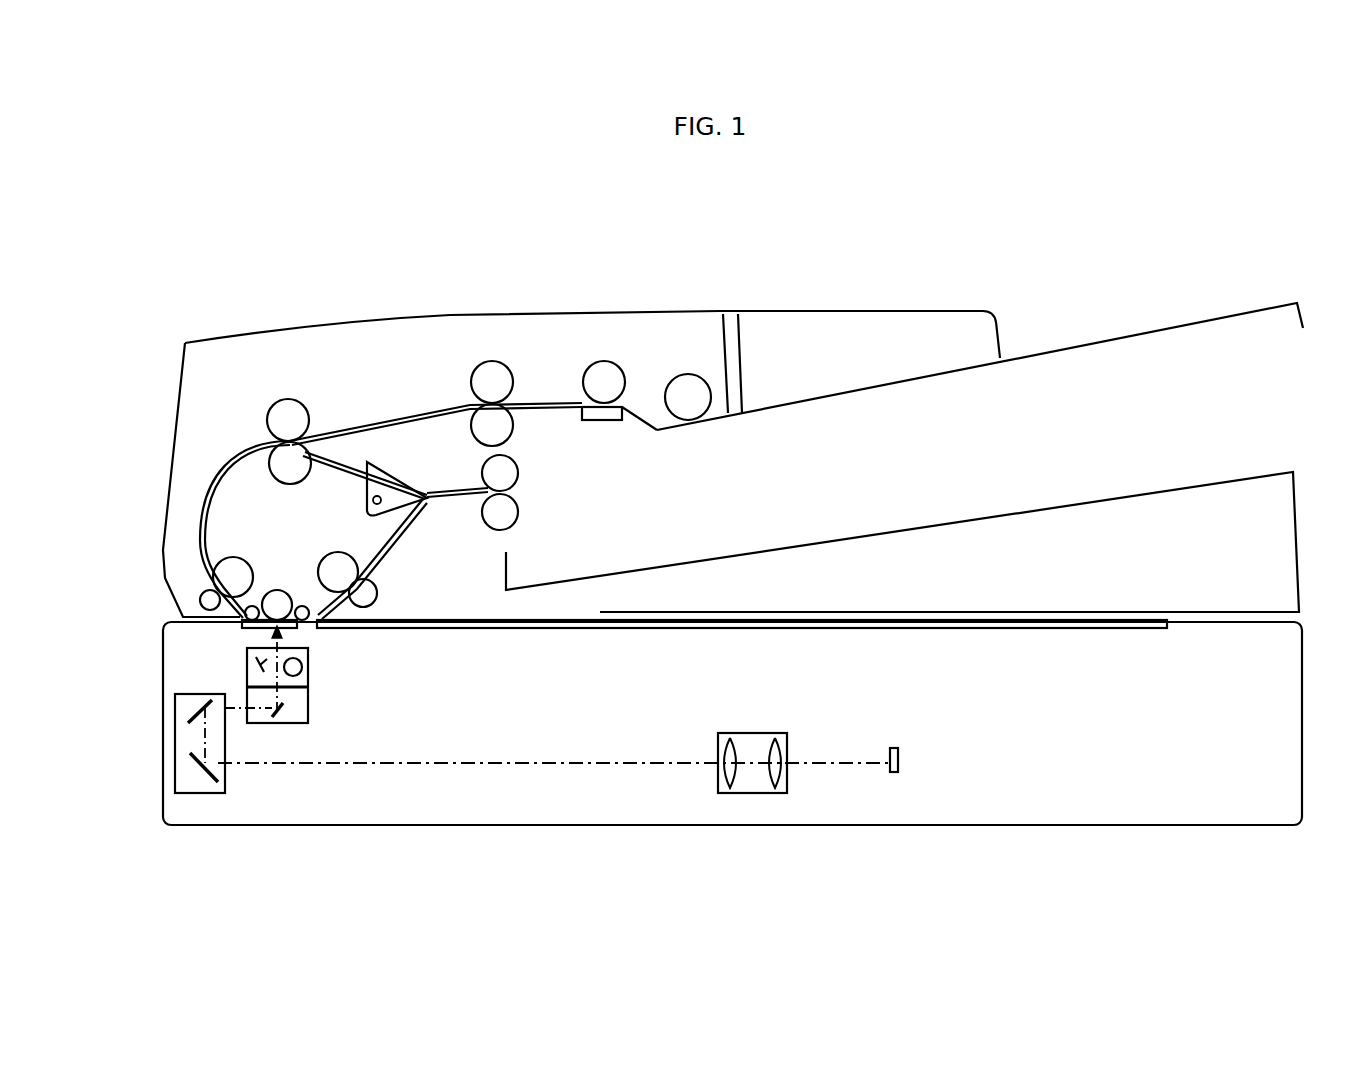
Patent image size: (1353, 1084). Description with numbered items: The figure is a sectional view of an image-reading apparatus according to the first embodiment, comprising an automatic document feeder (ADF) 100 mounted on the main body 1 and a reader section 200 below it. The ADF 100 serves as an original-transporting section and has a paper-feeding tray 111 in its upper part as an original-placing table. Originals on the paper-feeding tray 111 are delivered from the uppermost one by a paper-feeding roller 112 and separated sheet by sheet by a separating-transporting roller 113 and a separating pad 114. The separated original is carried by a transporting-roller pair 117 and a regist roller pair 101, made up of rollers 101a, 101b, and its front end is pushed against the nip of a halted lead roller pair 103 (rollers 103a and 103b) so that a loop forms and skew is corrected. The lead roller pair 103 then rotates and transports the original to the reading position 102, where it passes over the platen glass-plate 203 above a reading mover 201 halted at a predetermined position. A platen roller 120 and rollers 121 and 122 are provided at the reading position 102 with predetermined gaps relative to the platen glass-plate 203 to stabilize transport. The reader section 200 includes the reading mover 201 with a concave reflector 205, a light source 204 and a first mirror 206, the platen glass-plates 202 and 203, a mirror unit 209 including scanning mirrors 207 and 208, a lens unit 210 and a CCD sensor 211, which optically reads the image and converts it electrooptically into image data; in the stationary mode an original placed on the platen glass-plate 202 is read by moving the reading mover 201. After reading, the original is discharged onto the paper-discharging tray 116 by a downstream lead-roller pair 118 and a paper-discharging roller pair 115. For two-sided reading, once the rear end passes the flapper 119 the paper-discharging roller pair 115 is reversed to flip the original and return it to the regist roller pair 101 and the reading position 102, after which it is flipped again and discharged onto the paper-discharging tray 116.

The main body 1 is at (1302, 716).
The automatic document feeder 100 is at (809, 302).
The regist roller pair 101 is at (359, 408).
The regist roller 101a is at (290, 400).
The regist roller 101b is at (326, 433).
The reading position 102 is at (284, 630).
The lead roller pair 103 is at (145, 555).
The lead roller 103a is at (222, 568).
The lead roller 103b is at (159, 580).
The paper-feeding tray 111 is at (1025, 357).
The paper-feeding roller 112 is at (690, 374).
The separating-transporting roller 113 is at (604, 362).
The separating pad 114 is at (600, 421).
The paper-discharging roller pair 115 is at (516, 470).
The paper-discharging tray 116 is at (1022, 513).
The transporting-roller pair 117 is at (497, 425).
The downstream lead-roller pair 118 is at (359, 558).
The flapper 119 is at (426, 502).
The platen roller 120 is at (283, 591).
The roller 121 is at (255, 606).
The roller 122 is at (303, 606).
The reader section 200 is at (1075, 826).
The reading mover 201 is at (308, 695).
The platen glass-plate 202 is at (607, 629).
The platen glass-plate 203 is at (253, 629).
The light source 204 is at (302, 667).
The concave reflector 205 is at (258, 663).
The first mirror 206 is at (288, 715).
The scanning mirror 207 is at (190, 712).
The scanning mirror 208 is at (207, 778).
The mirror unit 209 is at (227, 780).
The lens unit 210 is at (748, 733).
The CCD sensor 211 is at (893, 748).